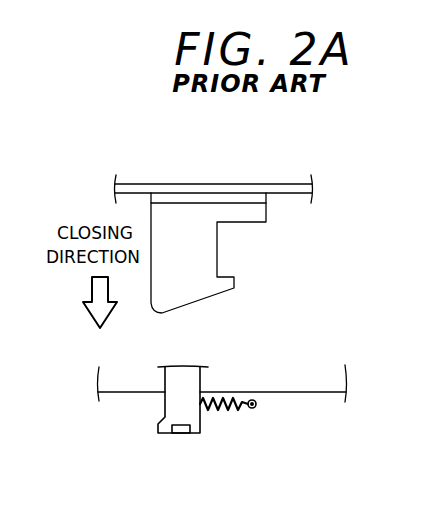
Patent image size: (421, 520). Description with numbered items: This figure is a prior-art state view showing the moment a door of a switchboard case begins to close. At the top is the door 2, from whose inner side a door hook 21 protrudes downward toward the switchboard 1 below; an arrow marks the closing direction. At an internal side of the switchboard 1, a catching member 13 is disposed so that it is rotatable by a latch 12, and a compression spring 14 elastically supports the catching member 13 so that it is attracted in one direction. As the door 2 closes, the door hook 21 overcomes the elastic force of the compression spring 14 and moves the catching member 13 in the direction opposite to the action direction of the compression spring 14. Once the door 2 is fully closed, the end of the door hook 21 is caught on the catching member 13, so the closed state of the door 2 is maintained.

The switchboard 1 is at (314, 393).
The door 2 is at (210, 191).
The latch 12 is at (170, 404).
The catching member 13 is at (178, 433).
The compression spring 14 is at (227, 412).
The door hook 21 is at (217, 250).